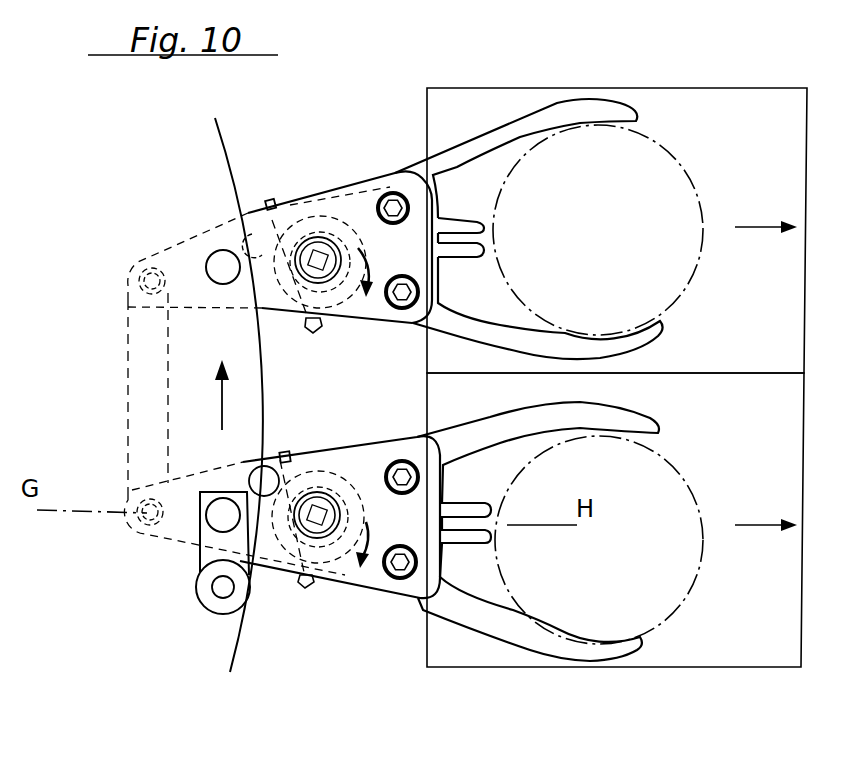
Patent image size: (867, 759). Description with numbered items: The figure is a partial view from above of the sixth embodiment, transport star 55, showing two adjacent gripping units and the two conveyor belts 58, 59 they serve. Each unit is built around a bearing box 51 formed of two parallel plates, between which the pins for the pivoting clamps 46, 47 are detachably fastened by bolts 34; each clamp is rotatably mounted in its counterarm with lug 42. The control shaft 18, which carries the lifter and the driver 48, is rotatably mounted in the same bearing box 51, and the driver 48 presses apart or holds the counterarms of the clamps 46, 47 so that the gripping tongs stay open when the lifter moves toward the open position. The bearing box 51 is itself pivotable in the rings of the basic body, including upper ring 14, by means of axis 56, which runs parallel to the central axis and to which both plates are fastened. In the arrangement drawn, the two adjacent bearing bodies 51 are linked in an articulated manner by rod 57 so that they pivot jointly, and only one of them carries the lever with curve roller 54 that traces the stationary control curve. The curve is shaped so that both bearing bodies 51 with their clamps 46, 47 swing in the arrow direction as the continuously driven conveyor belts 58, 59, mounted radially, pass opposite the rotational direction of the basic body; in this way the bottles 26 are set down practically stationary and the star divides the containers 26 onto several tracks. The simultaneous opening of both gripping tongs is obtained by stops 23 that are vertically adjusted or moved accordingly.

The upper ring 14 is at (220, 647).
The control shaft 18 is at (317, 512).
The second stop 23 is at (248, 213).
The bottles 26 is at (678, 137).
The bolts 34 is at (402, 290).
The lug 42 is at (474, 251).
The pivoting clamp 46 is at (588, 110).
The pivoting clamp 47 is at (593, 652).
The driver 48 is at (317, 334).
The bearing box 51 is at (350, 580).
The curve roller 54 is at (197, 592).
The transport star 55 is at (310, 92).
The axis 56 is at (221, 265).
The rod 57 is at (127, 397).
The conveyor belt 58 is at (757, 137).
The conveyor belt 59 is at (753, 650).